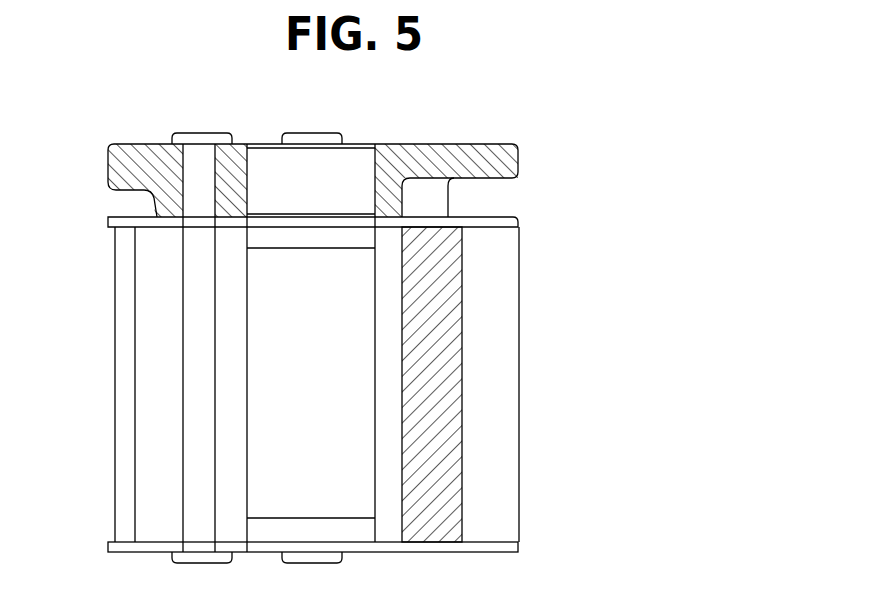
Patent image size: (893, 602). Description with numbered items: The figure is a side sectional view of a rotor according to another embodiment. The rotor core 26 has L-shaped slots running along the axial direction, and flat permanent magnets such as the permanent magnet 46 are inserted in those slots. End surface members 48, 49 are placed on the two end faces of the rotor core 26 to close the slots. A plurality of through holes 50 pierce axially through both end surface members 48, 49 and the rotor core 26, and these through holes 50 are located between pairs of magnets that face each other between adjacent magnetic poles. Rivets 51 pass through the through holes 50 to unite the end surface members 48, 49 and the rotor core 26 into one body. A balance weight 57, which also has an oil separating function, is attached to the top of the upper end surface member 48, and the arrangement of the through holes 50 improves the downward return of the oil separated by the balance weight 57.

The rotor core 26 is at (520, 302).
The permanent magnet 46 is at (450, 506).
The end surface member 48 is at (515, 218).
The end surface member 49 is at (517, 548).
The through hole 50 is at (182, 372).
The rivet 51 is at (202, 317).
The balance weight 57 is at (437, 143).